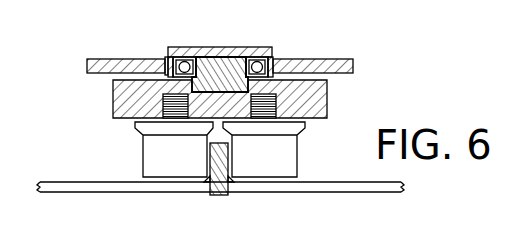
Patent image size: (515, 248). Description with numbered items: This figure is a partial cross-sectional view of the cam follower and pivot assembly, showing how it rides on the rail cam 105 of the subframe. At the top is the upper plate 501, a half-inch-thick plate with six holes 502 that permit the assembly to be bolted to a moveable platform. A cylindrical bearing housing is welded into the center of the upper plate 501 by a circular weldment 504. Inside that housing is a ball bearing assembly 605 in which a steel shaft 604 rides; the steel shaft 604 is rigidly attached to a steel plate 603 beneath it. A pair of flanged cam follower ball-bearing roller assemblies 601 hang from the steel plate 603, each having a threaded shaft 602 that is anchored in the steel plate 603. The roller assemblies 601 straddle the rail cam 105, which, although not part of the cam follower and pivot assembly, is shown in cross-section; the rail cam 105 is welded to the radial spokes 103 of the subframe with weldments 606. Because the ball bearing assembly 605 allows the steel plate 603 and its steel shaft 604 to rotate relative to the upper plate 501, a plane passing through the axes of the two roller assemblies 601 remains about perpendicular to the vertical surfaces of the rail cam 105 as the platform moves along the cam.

The radial spokes 103 is at (122, 187).
The rail cam 105 is at (222, 182).
The upper plate 501 is at (105, 62).
The holes 502 is at (228, 66).
The circular weldment 504 is at (164, 58).
The flanged cam follower ball-bearing roller assemblies 601 is at (160, 160).
The threaded shaft 602 is at (163, 102).
The steel plate 603 is at (312, 103).
The steel shaft 604 is at (228, 49).
The ball bearing assembly 605 is at (277, 57).
The weldments 606 is at (210, 182).